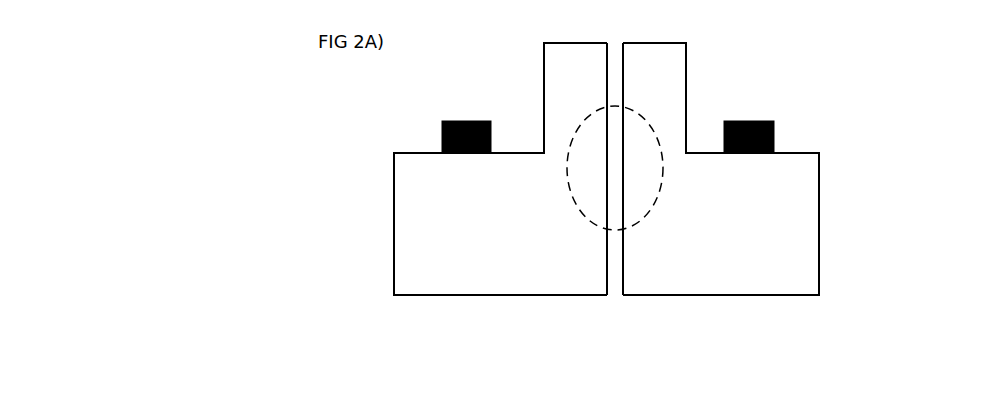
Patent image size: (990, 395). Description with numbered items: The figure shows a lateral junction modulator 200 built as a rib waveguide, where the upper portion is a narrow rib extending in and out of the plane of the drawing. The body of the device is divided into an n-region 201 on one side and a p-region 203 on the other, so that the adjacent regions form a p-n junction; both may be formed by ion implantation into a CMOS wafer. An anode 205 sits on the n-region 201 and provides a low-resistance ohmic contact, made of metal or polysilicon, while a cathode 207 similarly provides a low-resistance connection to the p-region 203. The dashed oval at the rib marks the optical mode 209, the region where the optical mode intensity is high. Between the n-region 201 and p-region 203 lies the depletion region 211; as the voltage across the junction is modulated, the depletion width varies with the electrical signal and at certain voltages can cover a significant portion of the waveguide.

The lateral junction modulator 200 is at (224, 96).
The n-region 201 is at (477, 258).
The p-region 203 is at (725, 250).
The anode 205 is at (447, 121).
The cathode 207 is at (774, 121).
The optical mode 209 is at (645, 217).
The depletion region 211 is at (613, 283).